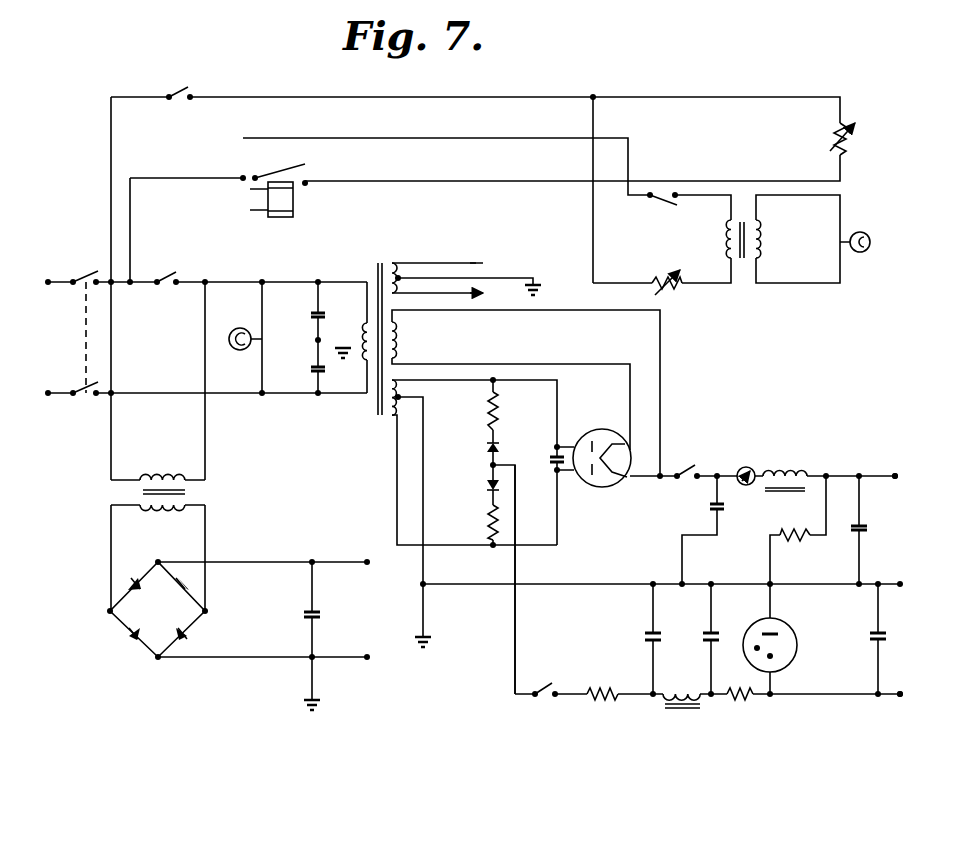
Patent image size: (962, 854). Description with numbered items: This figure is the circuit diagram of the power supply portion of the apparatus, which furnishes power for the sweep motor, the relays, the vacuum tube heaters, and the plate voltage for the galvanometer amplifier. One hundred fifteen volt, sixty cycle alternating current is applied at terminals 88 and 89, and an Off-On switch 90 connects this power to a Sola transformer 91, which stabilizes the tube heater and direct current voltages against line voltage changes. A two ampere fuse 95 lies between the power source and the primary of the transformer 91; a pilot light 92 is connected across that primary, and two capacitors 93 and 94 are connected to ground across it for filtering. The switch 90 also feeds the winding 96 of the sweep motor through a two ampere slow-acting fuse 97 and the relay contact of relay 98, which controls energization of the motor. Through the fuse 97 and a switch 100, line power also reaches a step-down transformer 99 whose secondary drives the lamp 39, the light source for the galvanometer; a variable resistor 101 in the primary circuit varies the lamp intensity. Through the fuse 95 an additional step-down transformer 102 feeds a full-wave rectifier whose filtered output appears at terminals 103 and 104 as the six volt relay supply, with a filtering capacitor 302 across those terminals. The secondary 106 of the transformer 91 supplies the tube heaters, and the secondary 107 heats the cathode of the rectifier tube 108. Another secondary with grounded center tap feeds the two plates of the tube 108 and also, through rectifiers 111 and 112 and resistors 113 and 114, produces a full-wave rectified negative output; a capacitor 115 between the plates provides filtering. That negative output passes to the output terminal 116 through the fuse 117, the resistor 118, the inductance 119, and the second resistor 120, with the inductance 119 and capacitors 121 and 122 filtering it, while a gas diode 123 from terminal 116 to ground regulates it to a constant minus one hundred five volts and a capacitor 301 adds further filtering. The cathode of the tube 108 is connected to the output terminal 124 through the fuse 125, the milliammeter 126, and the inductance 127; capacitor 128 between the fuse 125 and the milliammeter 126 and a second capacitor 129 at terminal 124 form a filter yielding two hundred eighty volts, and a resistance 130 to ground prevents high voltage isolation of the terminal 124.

The lamp 39 is at (871, 242).
The terminal 88 is at (47, 281).
The terminal 89 is at (47, 392).
The Off-On switch 90 is at (85, 278).
The Sola transformer 91 is at (383, 240).
The pilot light 92 is at (240, 328).
The capacitor 93 is at (311, 369).
The capacitor 94 is at (324, 311).
The two ampere fuse 95 is at (168, 278).
The winding of the sweep motor 96 is at (852, 149).
The two ampere slow-acting fuse 97 is at (189, 93).
The relay 98 is at (293, 206).
The step-down transformer 99 is at (726, 240).
The switch 100 is at (655, 201).
The variable resistor 101 is at (677, 292).
The step-down transformer 102 is at (190, 492).
The terminal 103 is at (367, 559).
The terminal 104 is at (367, 661).
The secondary 106 is at (400, 272).
The secondary 107 is at (401, 341).
The rectifier tube 108 is at (392, 426).
The rectifier 111 is at (486, 448).
The rectifier 112 is at (486, 490).
The resistor 113 is at (500, 424).
The resistor 114 is at (486, 513).
The capacitor 115 is at (550, 457).
The output terminal 116 is at (515, 636).
The fuse 117 is at (540, 674).
The resistor 118 is at (608, 674).
The inductance 119 is at (690, 674).
The second resistor 120 is at (754, 683).
The capacitor 121 is at (648, 632).
The capacitor 122 is at (714, 636).
The gas diode 123 is at (797, 634).
The output terminal 124 is at (897, 477).
The fuse 125 is at (687, 470).
The milliammeter 126 is at (748, 467).
The inductance 127 is at (790, 470).
The capacitor 128 is at (709, 508).
The second capacitor 129 is at (870, 530).
The resistance 130 is at (805, 533).
The capacitor 301 is at (888, 634).
The filtering capacitor 302 is at (316, 612).